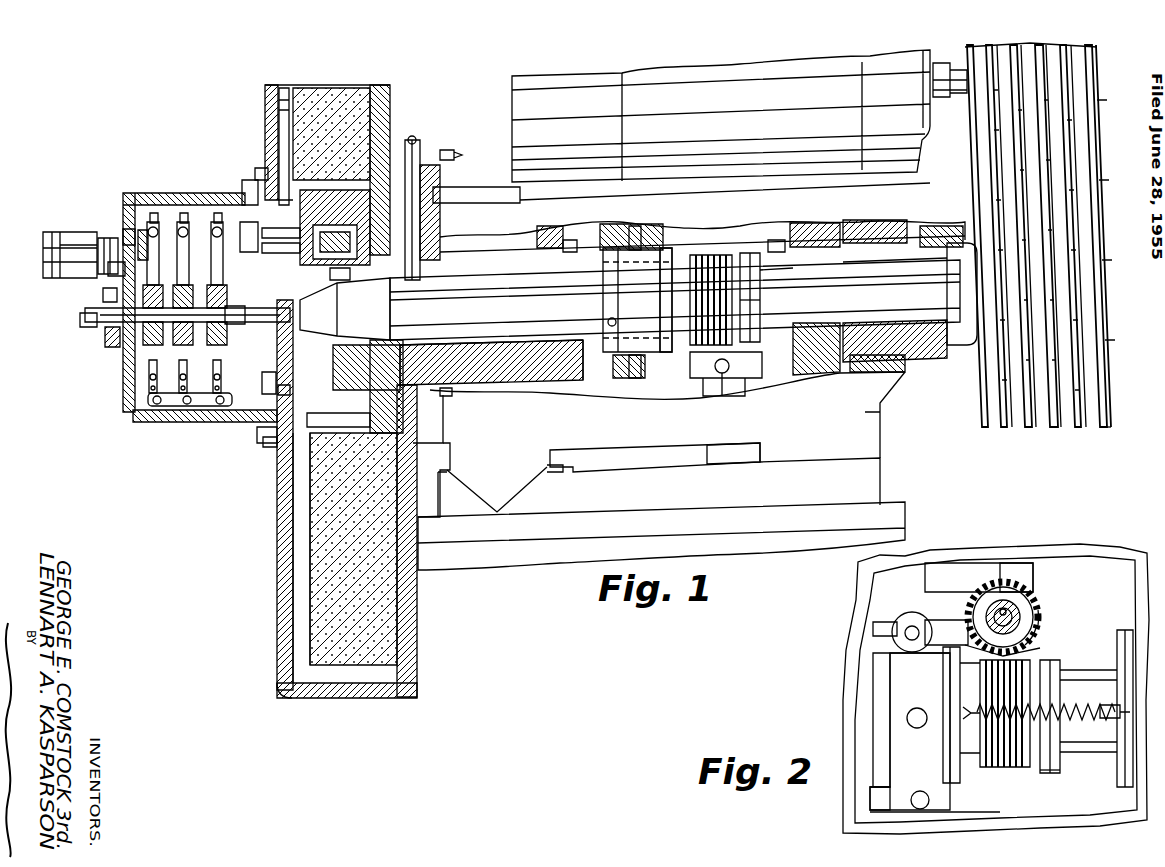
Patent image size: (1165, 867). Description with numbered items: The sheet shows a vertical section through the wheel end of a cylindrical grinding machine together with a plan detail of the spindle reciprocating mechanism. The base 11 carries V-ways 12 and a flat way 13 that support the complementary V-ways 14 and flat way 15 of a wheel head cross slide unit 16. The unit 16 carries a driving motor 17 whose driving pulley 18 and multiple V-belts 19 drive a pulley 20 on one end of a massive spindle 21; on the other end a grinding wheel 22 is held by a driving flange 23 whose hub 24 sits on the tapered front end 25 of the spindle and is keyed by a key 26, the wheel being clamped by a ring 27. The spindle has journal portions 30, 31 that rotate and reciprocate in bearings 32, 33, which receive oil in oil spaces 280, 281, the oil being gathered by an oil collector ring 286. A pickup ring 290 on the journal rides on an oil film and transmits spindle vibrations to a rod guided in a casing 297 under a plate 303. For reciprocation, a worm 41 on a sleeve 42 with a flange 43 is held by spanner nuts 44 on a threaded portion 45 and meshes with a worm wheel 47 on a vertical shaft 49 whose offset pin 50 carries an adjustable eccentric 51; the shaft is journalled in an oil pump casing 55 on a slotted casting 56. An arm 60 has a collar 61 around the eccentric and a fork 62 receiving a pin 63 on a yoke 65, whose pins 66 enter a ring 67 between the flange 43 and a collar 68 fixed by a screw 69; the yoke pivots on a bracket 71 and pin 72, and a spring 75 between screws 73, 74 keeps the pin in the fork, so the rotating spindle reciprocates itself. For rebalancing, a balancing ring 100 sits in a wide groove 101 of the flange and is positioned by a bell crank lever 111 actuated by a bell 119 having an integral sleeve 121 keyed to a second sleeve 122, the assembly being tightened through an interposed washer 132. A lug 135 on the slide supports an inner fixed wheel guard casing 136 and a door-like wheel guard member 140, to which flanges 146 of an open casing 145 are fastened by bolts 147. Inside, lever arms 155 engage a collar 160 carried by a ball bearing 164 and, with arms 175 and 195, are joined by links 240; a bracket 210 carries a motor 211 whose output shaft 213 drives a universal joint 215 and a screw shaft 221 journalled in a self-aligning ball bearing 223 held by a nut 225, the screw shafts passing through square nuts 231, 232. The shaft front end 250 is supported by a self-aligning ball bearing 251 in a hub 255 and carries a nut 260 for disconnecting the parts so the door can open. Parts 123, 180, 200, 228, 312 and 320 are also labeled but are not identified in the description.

In FIG. 1, the base 11 is at (870, 500).
In FIG. 1, the V-ways 12 is at (478, 490).
In FIG. 1, the flat way 13 is at (824, 458).
In FIG. 1, the complementary V-ways 14 is at (497, 513).
In FIG. 1, the flat way 15 is at (785, 462).
In FIG. 1, the wheel head cross slide unit 16 is at (880, 412).
In FIG. 1, the driving motor 17 is at (903, 127).
In FIG. 1, the driving pulley 18 is at (1097, 115).
In FIG. 1, the V-belts 19 is at (1082, 140).
In FIG. 1, the pulley 20 is at (1112, 427).
In FIG. 1, the spindle 21 is at (575, 255).
In FIG. 2, the spindle 21 is at (1120, 675).
In FIG. 1, the grinding wheel 22 is at (292, 103).
In FIG. 1, the driving flange 23 is at (400, 423).
In FIG. 1, the hub 24 is at (350, 335).
In FIG. 1, the tapered front end 25 is at (392, 310).
In FIG. 1, the key 26 is at (360, 280).
In FIG. 1, the ring 27 is at (282, 168).
In FIG. 1, the journal portion 30 is at (490, 397).
In FIG. 1, the journal portion 31 is at (800, 335).
In FIG. 1, the bearing 32 is at (522, 345).
In FIG. 1, the bearing 33 is at (888, 325).
In FIG. 1, the worm 41 is at (710, 256).
In FIG. 2, the worm 41 is at (1025, 660).
In FIG. 1, the sleeve 42 is at (748, 255).
In FIG. 2, the sleeve 42 is at (1052, 670).
In FIG. 1, the flange 43 is at (670, 250).
In FIG. 2, the flange 43 is at (960, 780).
In FIG. 1, the spanner nuts 44 is at (750, 300).
In FIG. 2, the spanner nuts 44 is at (1050, 772).
In FIG. 1, the threaded portion 45 is at (762, 285).
In FIG. 2, the threaded portion 45 is at (1062, 690).
In FIG. 2, the worm wheel 47 is at (1045, 610).
In FIG. 2, the vertical shaft 49 is at (1050, 620).
In FIG. 2, the offset pin 50 is at (1020, 600).
In FIG. 2, the adjustable eccentric 51 is at (1003, 615).
In FIG. 1, the oil pump casing 55 is at (700, 378).
In FIG. 2, the slotted casting 56 is at (1003, 572).
In FIG. 2, the arm 60 is at (945, 618).
In FIG. 2, the collar 61 is at (1030, 572).
In FIG. 2, the fork 62 is at (892, 622).
In FIG. 2, the pin 63 is at (873, 628).
In FIG. 2, the yoke 65 is at (898, 683).
In FIG. 1, the pins 66 is at (636, 228).
In FIG. 2, the pins 66 is at (917, 728).
In FIG. 1, the ring 67 is at (618, 290).
In FIG. 2, the ring 67 is at (943, 665).
In FIG. 1, the collar 68 is at (618, 365).
In FIG. 2, the collar 68 is at (878, 788).
In FIG. 1, the screw 69 is at (610, 322).
In FIG. 2, the bracket 71 is at (965, 812).
In FIG. 2, the pin 72 is at (920, 792).
In FIG. 2, the screw 73 is at (975, 705).
In FIG. 2, the screw 74 is at (1105, 720).
In FIG. 2, the spring 75 is at (1088, 725).
In FIG. 1, the balancing ring 100 is at (300, 246).
In FIG. 1, the wide groove 101 is at (300, 233).
In FIG. 1, the bell crank lever 111 is at (285, 398).
In FIG. 1, the bell 119 is at (278, 375).
In FIG. 1, the integral sleeve 121 is at (234, 376).
In FIG. 1, the integral sleeve 122 is at (225, 285).
In FIG. 1, the shaft bearing 123 is at (230, 315).
In FIG. 1, the interposed washer 132 is at (347, 270).
In FIG. 1, the lug 135 is at (450, 433).
In FIG. 1, the inner fixed wheel guard casing 136 is at (417, 610).
In FIG. 1, the door-like wheel guard member 140 is at (292, 615).
In FIG. 1, the open casing 145 is at (145, 422).
In FIG. 1, the flanges 146 is at (255, 173).
In FIG. 1, the bolts 147 is at (242, 185).
In FIG. 1, the lever arms 155 is at (143, 390).
In FIG. 1, the collar 160 is at (150, 360).
In FIG. 1, the ball bearing 164 is at (145, 345).
In FIG. 1, the arm 175 is at (168, 376).
In FIG. 1, the gear 180 is at (158, 285).
In FIG. 1, the arm 195 is at (198, 376).
In FIG. 1, the gear 200 is at (187, 285).
In FIG. 1, the bracket 210 is at (79, 257).
In FIG. 1, the motor 211 is at (45, 238).
In FIG. 1, the output shaft 213 is at (105, 238).
In FIG. 1, the universal joint 215 is at (128, 228).
In FIG. 1, the screw shaft 221 is at (156, 238).
In FIG. 1, the self-aligning ball bearing 223 is at (143, 228).
In FIG. 1, the nut 225 is at (110, 268).
In FIG. 1, the bracket 228 is at (288, 208).
In FIG. 1, the nut 231 is at (185, 238).
In FIG. 1, the nut 232 is at (218, 238).
In FIG. 1, the links 240 is at (205, 406).
In FIG. 1, the front end 250 is at (100, 312).
In FIG. 1, the self-aligning ball bearing 251 is at (108, 340).
In FIG. 1, the hub 255 is at (103, 295).
In FIG. 1, the nut 260 is at (85, 325).
In FIG. 1, the oil space 280 is at (488, 262).
In FIG. 1, the oil space 281 is at (868, 264).
In FIG. 1, the oil collector ring 286 is at (446, 392).
In FIG. 1, the pickup ring 290 is at (420, 347).
In FIG. 1, the casing 297 is at (440, 182).
In FIG. 1, the plate 303 is at (440, 195).
In FIG. 1, the bolt 312 is at (452, 150).
In FIG. 1, the rod 320 is at (410, 142).